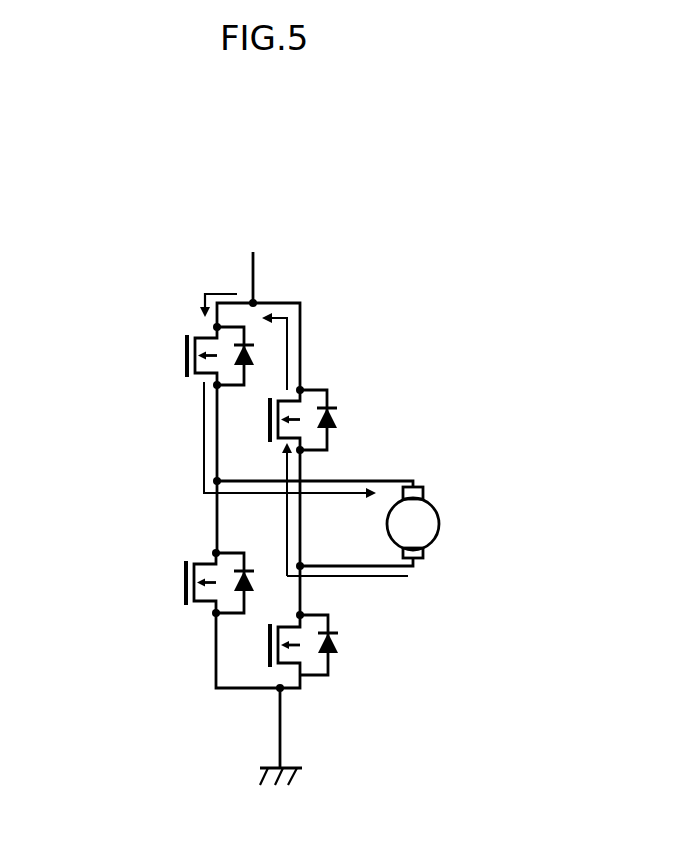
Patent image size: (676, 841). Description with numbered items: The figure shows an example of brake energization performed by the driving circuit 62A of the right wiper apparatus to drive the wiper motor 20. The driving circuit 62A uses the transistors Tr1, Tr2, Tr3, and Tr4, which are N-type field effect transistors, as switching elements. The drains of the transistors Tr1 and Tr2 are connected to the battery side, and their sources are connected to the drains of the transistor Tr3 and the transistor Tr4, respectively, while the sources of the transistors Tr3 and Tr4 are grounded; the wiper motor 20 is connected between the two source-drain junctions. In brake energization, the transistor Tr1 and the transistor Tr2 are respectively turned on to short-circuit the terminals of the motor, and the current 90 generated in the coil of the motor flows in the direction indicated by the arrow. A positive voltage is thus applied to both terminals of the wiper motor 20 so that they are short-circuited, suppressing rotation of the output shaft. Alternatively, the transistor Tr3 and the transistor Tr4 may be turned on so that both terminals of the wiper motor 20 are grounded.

The driving circuit 62A is at (278, 288).
The transistor Tr1 is at (208, 336).
The transistor Tr2 is at (332, 394).
The transistor Tr3 is at (210, 558).
The transistor Tr4 is at (330, 667).
The current 90 is at (203, 427).
The wiper motor 20 is at (437, 537).